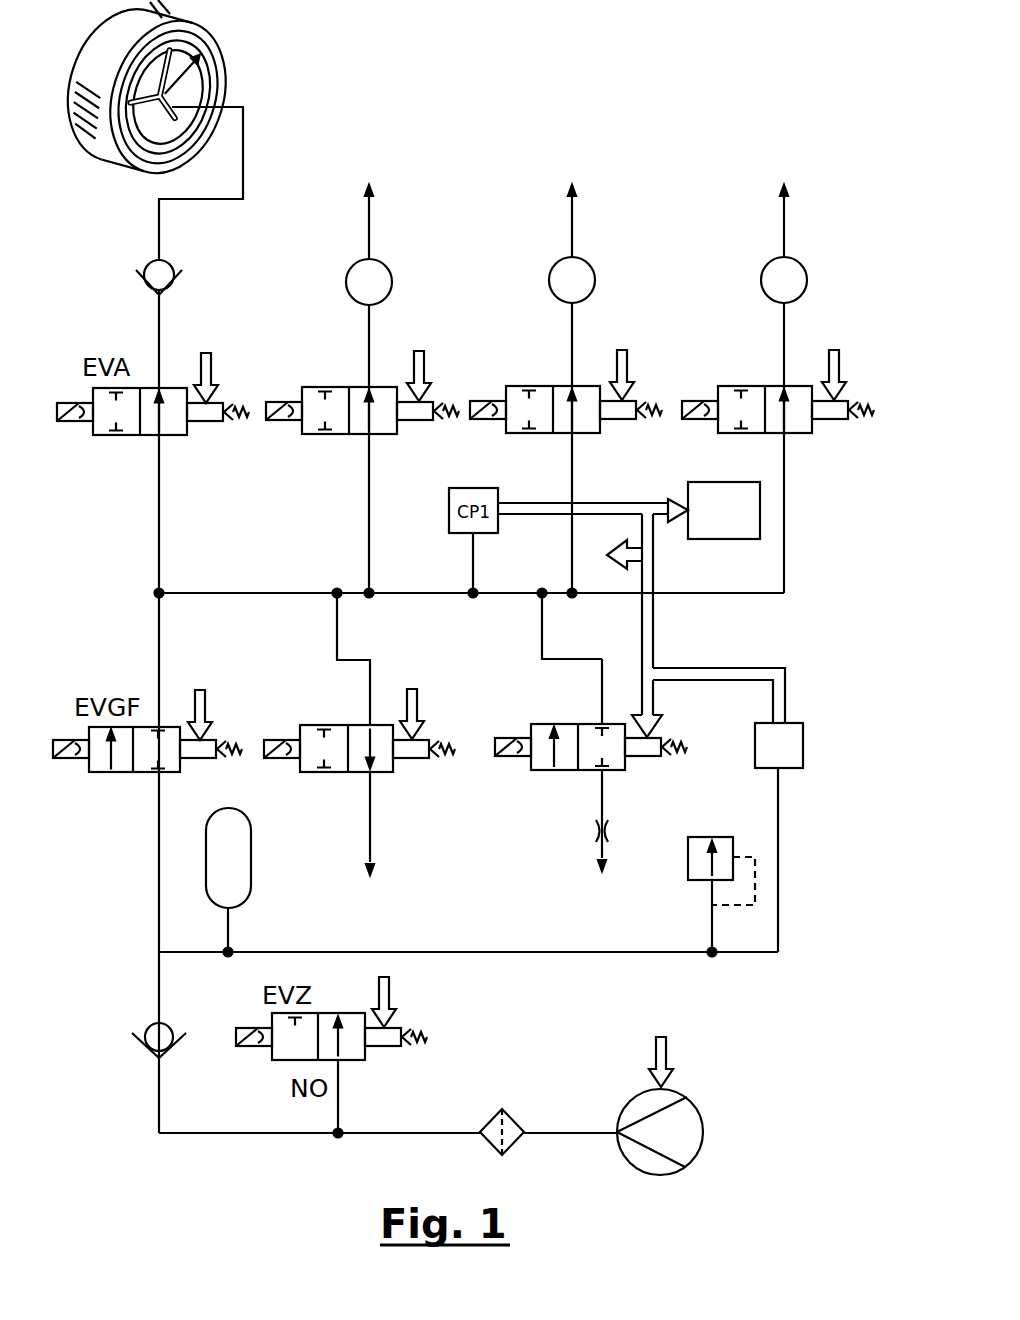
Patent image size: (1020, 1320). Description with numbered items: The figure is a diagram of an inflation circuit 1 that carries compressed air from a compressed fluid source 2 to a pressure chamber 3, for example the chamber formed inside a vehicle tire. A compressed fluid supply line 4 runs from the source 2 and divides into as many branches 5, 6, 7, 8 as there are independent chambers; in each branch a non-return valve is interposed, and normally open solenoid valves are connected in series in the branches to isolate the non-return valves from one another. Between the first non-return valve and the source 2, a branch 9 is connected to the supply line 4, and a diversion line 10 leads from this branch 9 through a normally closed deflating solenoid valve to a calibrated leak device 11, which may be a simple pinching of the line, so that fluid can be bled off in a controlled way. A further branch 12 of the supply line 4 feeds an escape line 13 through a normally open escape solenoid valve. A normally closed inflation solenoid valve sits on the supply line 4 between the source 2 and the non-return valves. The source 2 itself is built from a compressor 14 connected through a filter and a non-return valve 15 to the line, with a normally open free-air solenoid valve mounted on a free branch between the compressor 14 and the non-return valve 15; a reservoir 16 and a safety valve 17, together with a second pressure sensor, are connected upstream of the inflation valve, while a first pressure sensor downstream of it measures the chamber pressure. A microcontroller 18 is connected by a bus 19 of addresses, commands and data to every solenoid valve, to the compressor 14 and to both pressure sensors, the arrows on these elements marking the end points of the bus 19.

The inflation circuit 1 is at (441, 915).
The compressed fluid source 2 is at (127, 793).
The pressure chamber 3 is at (226, 66).
The compressed fluid supply line 4 is at (280, 597).
The branch 5 is at (159, 318).
The branch 6 is at (368, 482).
The branch 7 is at (572, 455).
The branch 8 is at (784, 487).
The branch 9 is at (542, 586).
The diversion line 10 is at (542, 608).
The calibrated leak device 11 is at (593, 828).
The branch 12 is at (337, 590).
The escape line 13 is at (371, 797).
The compressor 14 is at (700, 1120).
The non-return valve 15 is at (170, 1047).
The reservoir 16 is at (251, 858).
The safety valve 17 is at (688, 855).
The microcontroller 18 is at (745, 538).
The bus 19 is at (758, 668).